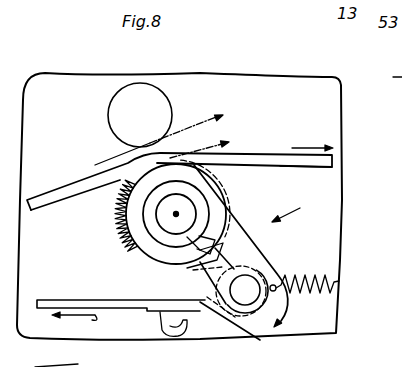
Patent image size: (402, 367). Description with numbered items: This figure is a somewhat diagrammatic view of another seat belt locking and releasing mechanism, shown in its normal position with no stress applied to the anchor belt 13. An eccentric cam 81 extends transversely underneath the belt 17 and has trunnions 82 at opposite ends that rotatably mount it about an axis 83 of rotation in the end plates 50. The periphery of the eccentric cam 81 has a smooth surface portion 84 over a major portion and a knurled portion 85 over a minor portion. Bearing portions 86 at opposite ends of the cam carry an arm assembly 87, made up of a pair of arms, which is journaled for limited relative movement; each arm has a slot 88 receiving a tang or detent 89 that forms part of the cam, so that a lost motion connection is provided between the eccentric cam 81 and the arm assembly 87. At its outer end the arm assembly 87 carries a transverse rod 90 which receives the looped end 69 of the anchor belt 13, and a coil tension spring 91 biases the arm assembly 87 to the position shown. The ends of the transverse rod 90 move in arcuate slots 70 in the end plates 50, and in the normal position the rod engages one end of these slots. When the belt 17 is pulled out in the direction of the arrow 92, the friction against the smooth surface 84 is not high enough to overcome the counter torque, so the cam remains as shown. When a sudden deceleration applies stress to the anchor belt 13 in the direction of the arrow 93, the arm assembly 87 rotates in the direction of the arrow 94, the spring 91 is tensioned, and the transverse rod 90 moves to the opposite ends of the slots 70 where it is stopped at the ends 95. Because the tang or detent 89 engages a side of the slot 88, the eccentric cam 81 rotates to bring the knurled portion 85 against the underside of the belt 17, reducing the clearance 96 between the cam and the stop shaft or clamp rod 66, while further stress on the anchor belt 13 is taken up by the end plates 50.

The anchor belt 13 is at (55, 300).
The belt 17 is at (293, 166).
The end plates 50 is at (334, 186).
The stop shaft or clamp rod 66 is at (147, 98).
The looped end 69 is at (279, 332).
The arcuate slots 70 is at (213, 327).
The eccentric cam 81 is at (132, 175).
The trunnions 82 is at (183, 202).
The axis of rotation 83 is at (178, 214).
The smooth surface portion 84 is at (125, 170).
The knurled portion 85 is at (113, 207).
The bearing portions 86 is at (214, 144).
The arm assembly 87 is at (297, 206).
The slots 88 is at (195, 260).
The tang or detent 89 is at (223, 243).
The transverse rod 90 is at (275, 285).
The coil tension spring 91 is at (313, 273).
The arrow 92 is at (312, 140).
The arrow 93 is at (87, 323).
The arrow 94 is at (289, 296).
The ends of the slots 95 is at (180, 340).
The clearance 96 is at (205, 98).